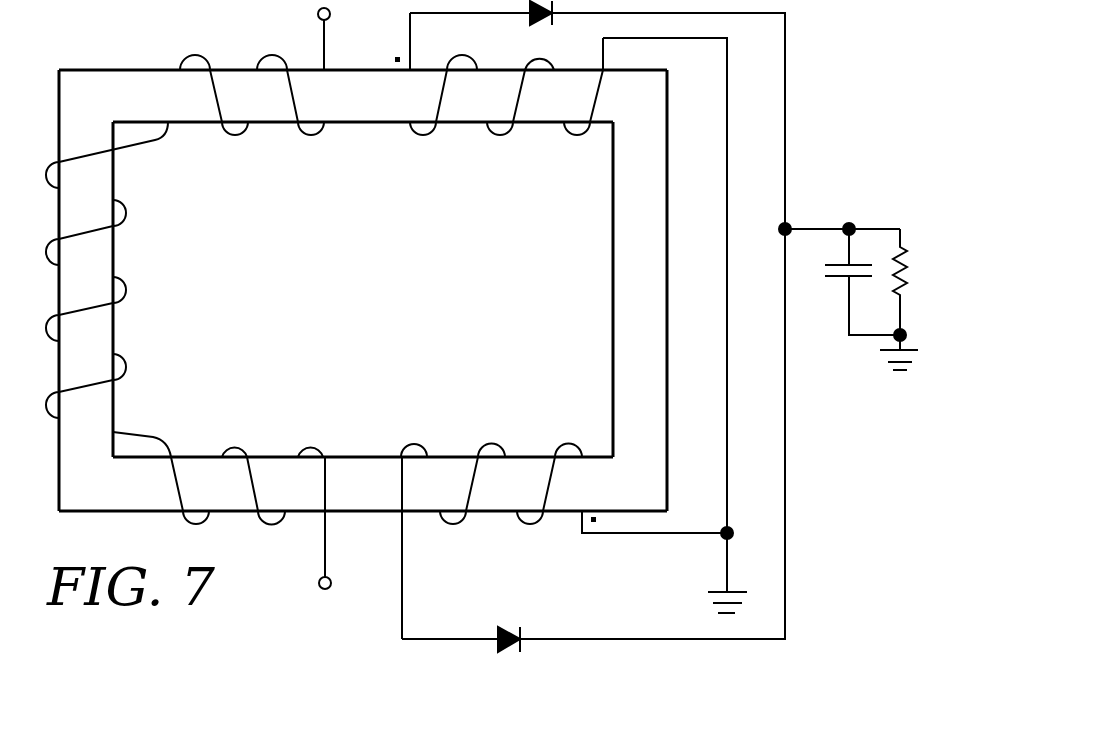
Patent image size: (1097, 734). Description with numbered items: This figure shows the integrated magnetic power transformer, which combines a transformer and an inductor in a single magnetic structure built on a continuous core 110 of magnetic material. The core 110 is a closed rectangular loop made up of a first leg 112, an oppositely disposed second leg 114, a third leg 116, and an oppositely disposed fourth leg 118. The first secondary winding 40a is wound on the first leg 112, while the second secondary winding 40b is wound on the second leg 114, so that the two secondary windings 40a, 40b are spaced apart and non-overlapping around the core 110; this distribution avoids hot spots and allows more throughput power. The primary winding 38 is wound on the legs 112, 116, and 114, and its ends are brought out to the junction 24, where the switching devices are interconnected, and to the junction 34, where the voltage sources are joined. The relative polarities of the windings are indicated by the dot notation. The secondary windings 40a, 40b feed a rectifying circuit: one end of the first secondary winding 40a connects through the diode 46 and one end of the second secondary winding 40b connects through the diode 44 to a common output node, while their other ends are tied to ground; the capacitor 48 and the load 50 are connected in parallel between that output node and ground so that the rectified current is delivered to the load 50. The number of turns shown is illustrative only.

The junction 24 is at (318, 14).
The junction 34 is at (318, 583).
The primary winding 38 is at (125, 218).
The first secondary winding 40a is at (423, 134).
The second secondary winding 40b is at (410, 442).
The diode 44 is at (513, 625).
The diode 46 is at (525, 26).
The capacitor 48 is at (837, 282).
The load 50 is at (920, 248).
The core 110 is at (350, 100).
The first leg 112 is at (380, 103).
The second leg 114 is at (342, 483).
The third leg 116 is at (88, 348).
The fourth leg 118 is at (633, 306).